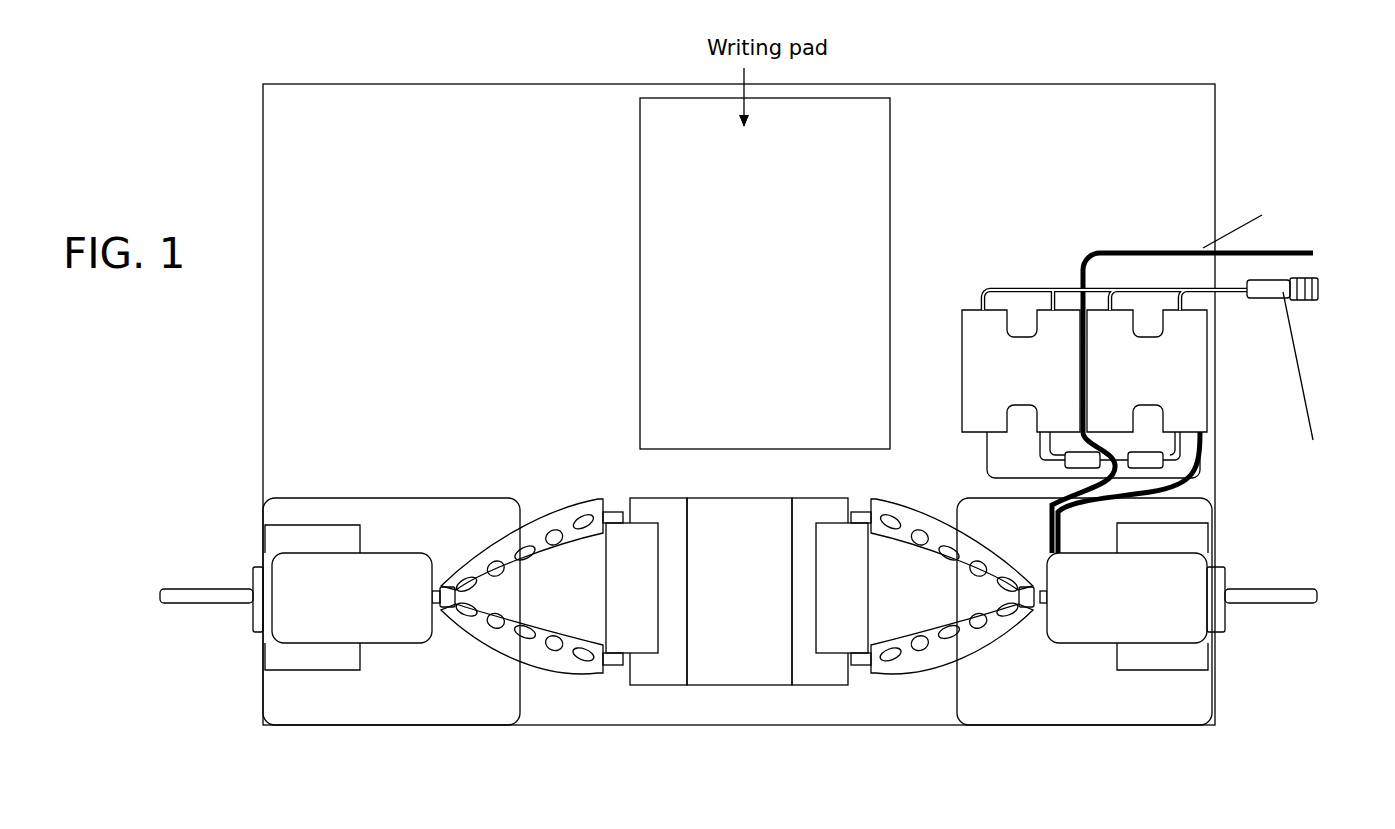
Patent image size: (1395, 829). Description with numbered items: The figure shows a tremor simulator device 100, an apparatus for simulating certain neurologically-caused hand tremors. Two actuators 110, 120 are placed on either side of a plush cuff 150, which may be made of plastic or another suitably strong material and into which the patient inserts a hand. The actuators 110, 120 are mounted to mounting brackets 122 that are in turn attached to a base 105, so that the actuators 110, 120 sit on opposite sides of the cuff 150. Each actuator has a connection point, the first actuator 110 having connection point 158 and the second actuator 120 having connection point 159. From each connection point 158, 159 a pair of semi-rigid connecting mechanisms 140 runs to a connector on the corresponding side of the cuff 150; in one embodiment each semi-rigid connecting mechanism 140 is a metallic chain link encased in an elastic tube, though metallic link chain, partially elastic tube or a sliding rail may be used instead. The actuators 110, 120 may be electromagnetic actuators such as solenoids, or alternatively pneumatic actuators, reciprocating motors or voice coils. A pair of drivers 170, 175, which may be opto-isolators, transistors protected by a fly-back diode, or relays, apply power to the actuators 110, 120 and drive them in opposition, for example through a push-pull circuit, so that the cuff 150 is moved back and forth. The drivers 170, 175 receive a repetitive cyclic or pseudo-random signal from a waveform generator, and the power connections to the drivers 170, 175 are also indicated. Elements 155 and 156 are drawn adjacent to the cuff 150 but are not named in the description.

The tremor simulator device 100 is at (1083, 58).
The base 105 is at (1172, 153).
The actuator 110 is at (387, 645).
The actuator 120 is at (1083, 645).
The mounting brackets 122 is at (293, 672).
The semi-rigid connecting mechanisms 140 is at (470, 652).
The cuff 150 is at (738, 687).
The first slider block 155 is at (640, 655).
The second slider block 156 is at (840, 655).
The connection point 158 is at (441, 588).
The connection point 159 is at (1038, 608).
The driver 170 is at (988, 348).
The driver 175 is at (1209, 380).